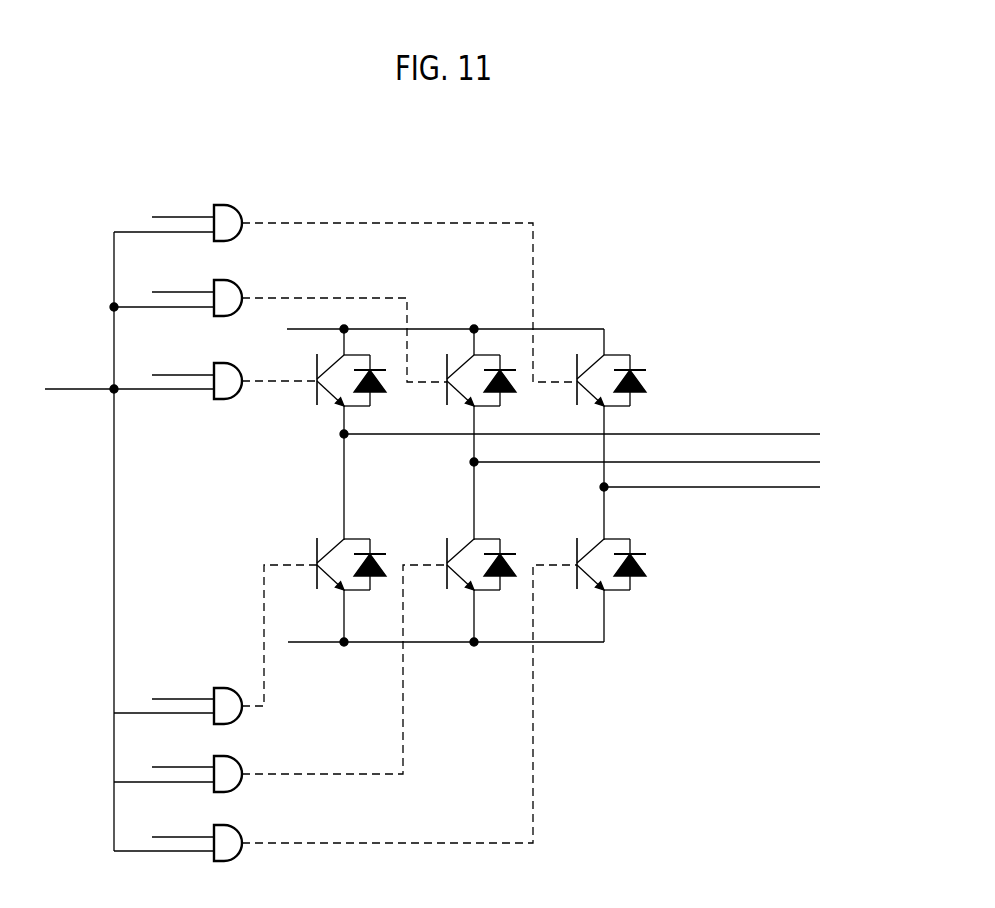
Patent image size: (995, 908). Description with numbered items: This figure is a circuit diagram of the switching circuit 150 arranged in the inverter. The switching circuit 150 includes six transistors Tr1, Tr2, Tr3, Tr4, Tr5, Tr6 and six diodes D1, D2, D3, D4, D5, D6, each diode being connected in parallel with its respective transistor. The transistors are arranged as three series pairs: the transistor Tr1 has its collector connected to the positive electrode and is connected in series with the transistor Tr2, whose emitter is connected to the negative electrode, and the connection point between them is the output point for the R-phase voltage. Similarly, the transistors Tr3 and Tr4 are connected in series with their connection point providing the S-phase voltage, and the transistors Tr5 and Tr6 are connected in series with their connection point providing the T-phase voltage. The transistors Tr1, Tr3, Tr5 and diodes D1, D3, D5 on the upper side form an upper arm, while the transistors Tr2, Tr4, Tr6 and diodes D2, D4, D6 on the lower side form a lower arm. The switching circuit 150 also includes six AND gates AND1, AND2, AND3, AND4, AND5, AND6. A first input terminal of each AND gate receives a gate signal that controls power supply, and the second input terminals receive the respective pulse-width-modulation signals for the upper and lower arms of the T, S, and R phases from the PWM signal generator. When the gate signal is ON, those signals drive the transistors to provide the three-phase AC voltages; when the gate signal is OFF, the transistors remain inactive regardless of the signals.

The switching circuit 150 is at (598, 228).
The AND gate AND1 is at (268, 193).
The AND gate AND2 is at (268, 268).
The AND gate AND3 is at (268, 351).
The AND gate AND4 is at (228, 720).
The AND gate AND5 is at (228, 788).
The AND gate AND6 is at (228, 857).
The transistor Tr1 is at (335, 434).
The transistor Tr2 is at (336, 590).
The transistor Tr3 is at (465, 434).
The transistor Tr4 is at (473, 590).
The transistor Tr5 is at (595, 434).
The transistor Tr6 is at (604, 590).
The diode D1 is at (389, 405).
The diode D2 is at (387, 536).
The diode D3 is at (519, 405).
The diode D4 is at (517, 536).
The diode D5 is at (649, 405).
The diode D6 is at (649, 535).